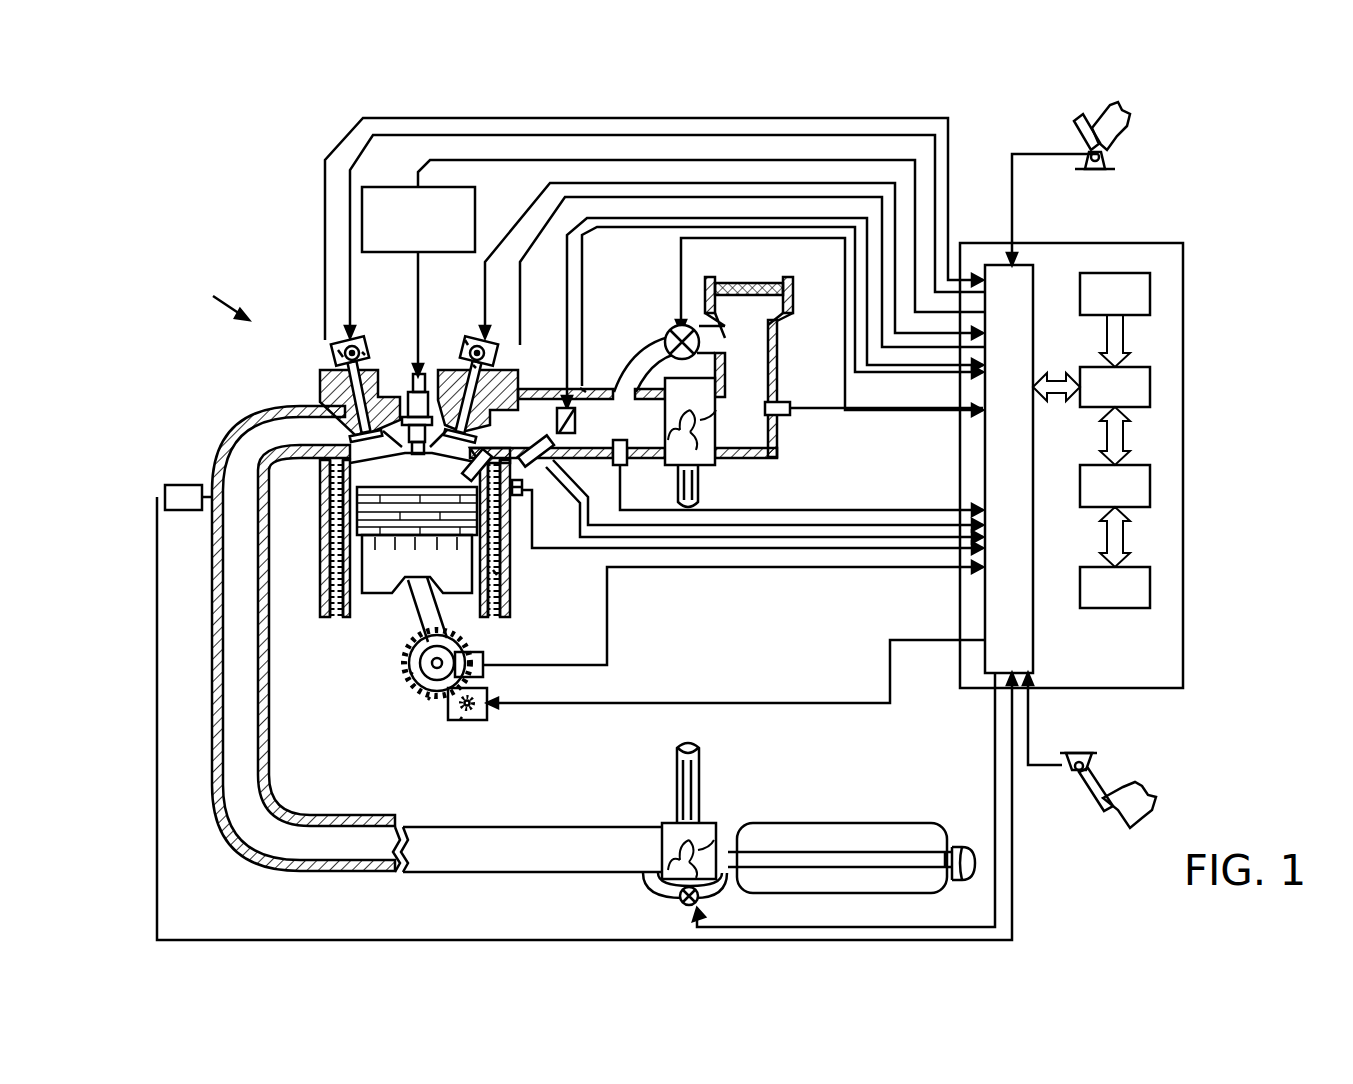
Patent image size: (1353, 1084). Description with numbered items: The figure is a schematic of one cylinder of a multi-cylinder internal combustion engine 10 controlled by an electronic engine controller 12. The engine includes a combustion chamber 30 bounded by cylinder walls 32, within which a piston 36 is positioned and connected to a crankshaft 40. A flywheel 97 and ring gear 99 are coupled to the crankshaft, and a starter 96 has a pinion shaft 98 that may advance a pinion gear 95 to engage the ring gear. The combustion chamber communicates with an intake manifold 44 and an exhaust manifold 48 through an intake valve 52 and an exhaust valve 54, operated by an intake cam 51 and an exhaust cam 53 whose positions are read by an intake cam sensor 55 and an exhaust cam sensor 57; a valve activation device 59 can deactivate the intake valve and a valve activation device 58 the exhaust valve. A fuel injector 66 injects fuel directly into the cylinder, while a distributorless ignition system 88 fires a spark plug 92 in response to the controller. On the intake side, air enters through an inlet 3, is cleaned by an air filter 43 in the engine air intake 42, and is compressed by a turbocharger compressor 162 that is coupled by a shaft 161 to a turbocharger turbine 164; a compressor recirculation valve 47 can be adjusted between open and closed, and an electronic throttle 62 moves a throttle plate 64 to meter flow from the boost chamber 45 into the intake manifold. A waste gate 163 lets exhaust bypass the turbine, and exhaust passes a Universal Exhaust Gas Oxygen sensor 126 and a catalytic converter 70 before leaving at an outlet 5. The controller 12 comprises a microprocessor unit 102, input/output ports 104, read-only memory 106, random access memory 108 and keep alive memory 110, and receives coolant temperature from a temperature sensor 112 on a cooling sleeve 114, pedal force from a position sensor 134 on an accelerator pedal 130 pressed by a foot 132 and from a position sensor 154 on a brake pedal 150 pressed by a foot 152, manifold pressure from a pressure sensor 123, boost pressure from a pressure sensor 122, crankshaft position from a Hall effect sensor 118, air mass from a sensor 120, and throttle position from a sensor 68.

The inlet 3 is at (764, 281).
The outlet 5 is at (960, 840).
The internal combustion engine 10 is at (216, 299).
The electronic engine controller 12 is at (1183, 243).
The combustion chamber 30 is at (415, 470).
The cylinder walls 32 is at (348, 618).
The piston 36 is at (400, 595).
The crankshaft 40 is at (420, 698).
The engine air intake 42 is at (657, 290).
The air filter 43 is at (722, 298).
The intake manifold 44 is at (520, 431).
The boost chamber 45 is at (617, 431).
The compressor recirculation valve 47 is at (672, 336).
The exhaust manifold 48 is at (277, 441).
The intake cam 51 is at (465, 340).
The intake valve 52 is at (470, 435).
The exhaust cam 53 is at (362, 340).
The exhaust valve 54 is at (347, 425).
The intake cam sensor 55 is at (488, 357).
The exhaust cam sensor 57 is at (343, 357).
The valve activation device 58 is at (365, 352).
The valve activation device 59 is at (473, 365).
The electronic throttle 62 is at (575, 423).
The throttle plate 64 is at (572, 433).
The fuel injector 66 is at (520, 492).
The throttle position sensor 68 is at (583, 391).
The catalytic converter 70 is at (780, 823).
The distributorless ignition system 88 is at (378, 187).
The spark plug 92 is at (420, 372).
The pinion gear 95 is at (472, 718).
The starter 96 is at (485, 718).
The flywheel 97 is at (410, 672).
The pinion shaft 98 is at (460, 720).
The ring gear 99 is at (428, 700).
The microprocessor unit 102 is at (1150, 386).
The input/output ports 104 is at (1033, 268).
The read-only memory 106 is at (1150, 291).
The random access memory 108 is at (1150, 487).
The keep alive memory 110 is at (1150, 588).
The temperature sensor 112 is at (522, 495).
The cooling sleeve 114 is at (497, 575).
The Hall effect sensor 118 is at (483, 655).
The air mass sensor 120 is at (785, 403).
The pressure sensor 122 is at (625, 472).
The pressure sensor 123 is at (555, 460).
The Universal Exhaust Gas Oxygen sensor 126 is at (165, 490).
The accelerator pedal 130 is at (1078, 133).
The foot 132 is at (1127, 116).
The position sensor 134 is at (1120, 168).
The brake pedal 150 is at (1100, 813).
The foot 152 is at (1138, 790).
The position sensor 154 is at (1066, 763).
The shaft 161 is at (700, 490).
The turbocharger compressor 162 is at (718, 455).
The waste gate 163 is at (681, 904).
The turbocharger turbine 164 is at (662, 825).